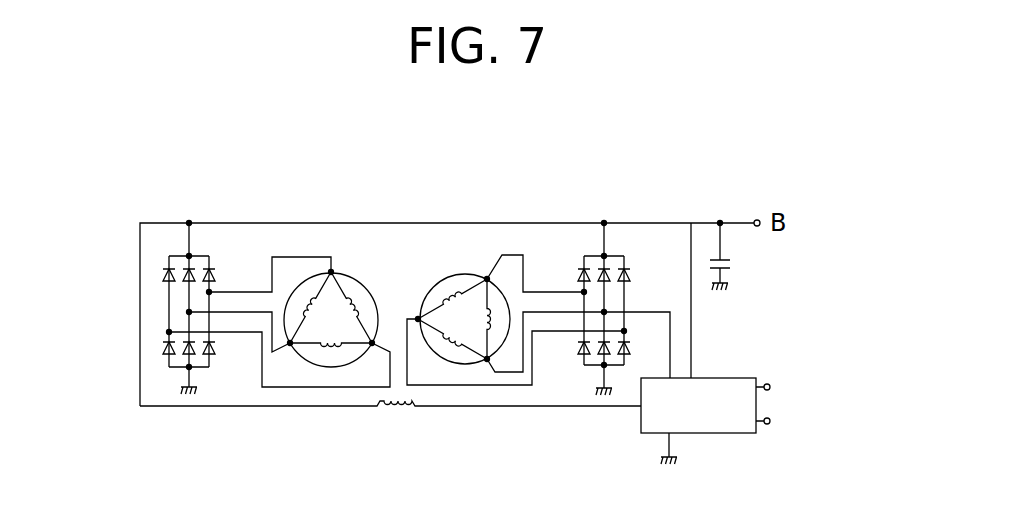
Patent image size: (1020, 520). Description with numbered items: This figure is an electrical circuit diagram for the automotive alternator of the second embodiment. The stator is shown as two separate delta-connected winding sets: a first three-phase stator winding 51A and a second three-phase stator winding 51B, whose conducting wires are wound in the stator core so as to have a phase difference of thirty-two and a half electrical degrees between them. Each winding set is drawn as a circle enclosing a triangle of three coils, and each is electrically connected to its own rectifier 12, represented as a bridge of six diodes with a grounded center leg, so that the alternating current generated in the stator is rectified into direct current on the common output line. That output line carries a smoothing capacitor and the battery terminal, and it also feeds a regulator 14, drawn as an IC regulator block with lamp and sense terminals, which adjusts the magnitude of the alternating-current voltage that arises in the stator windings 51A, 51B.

The rectifier 12 is at (199, 252).
The first three-phase stator winding 51A is at (325, 366).
The second three-phase stator winding 51B is at (460, 364).
The regulator 14 is at (707, 434).